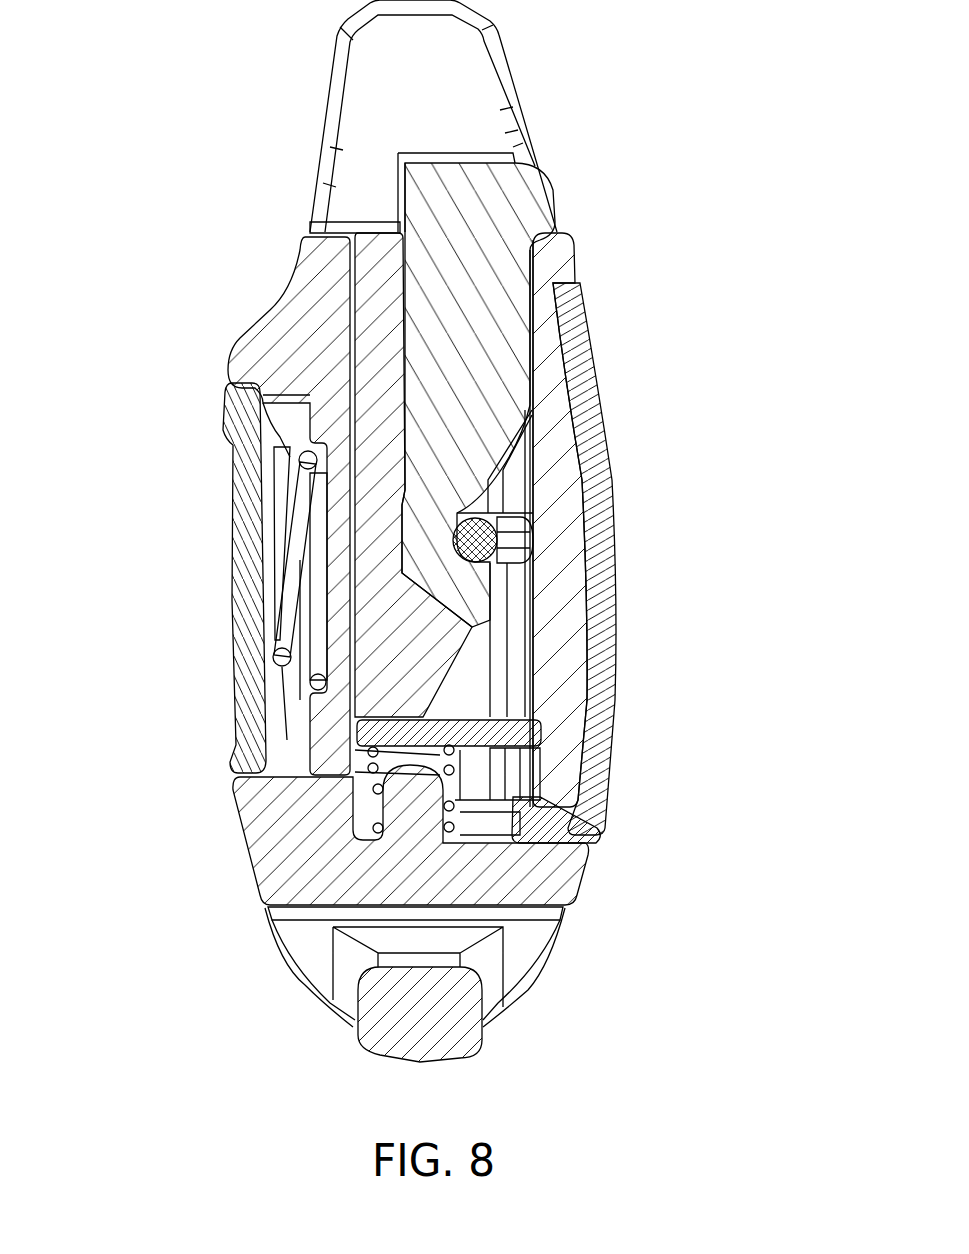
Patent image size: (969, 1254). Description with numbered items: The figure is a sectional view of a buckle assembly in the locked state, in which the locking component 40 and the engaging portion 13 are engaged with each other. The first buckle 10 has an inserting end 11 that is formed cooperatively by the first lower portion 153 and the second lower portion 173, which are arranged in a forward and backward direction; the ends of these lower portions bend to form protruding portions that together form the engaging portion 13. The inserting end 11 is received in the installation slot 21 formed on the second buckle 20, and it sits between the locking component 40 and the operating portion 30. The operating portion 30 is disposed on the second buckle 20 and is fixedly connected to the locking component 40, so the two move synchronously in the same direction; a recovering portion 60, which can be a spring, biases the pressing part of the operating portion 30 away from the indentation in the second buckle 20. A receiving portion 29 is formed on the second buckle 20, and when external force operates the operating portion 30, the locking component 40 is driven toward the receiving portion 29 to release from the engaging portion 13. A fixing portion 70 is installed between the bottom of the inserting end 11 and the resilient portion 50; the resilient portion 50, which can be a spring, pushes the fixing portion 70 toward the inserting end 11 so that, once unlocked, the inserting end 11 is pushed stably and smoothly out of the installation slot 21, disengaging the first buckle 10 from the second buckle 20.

The first buckle 10 is at (549, 162).
The inserting end 11 is at (308, 435).
The second lower portion 173 is at (445, 385).
The first lower portion 153 is at (375, 405).
The engaging portion 13 is at (474, 501).
The locking component 40 is at (495, 537).
The receiving portion 29 is at (500, 550).
The operating portion 30 is at (243, 598).
The recovering portion 60 is at (292, 627).
The installation slot 21 is at (470, 690).
The fixing portion 70 is at (460, 730).
The resilient portion 50 is at (600, 835).
The second buckle 20 is at (287, 845).